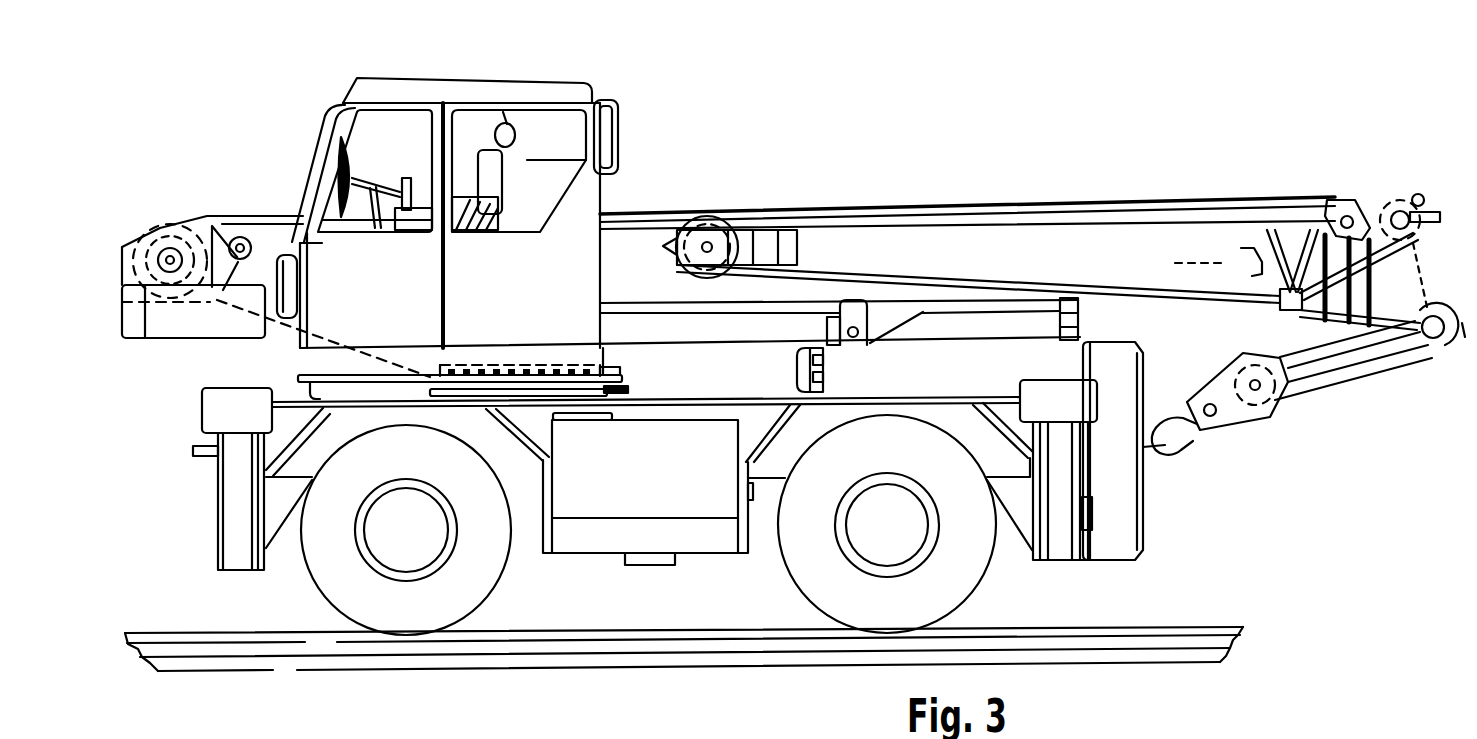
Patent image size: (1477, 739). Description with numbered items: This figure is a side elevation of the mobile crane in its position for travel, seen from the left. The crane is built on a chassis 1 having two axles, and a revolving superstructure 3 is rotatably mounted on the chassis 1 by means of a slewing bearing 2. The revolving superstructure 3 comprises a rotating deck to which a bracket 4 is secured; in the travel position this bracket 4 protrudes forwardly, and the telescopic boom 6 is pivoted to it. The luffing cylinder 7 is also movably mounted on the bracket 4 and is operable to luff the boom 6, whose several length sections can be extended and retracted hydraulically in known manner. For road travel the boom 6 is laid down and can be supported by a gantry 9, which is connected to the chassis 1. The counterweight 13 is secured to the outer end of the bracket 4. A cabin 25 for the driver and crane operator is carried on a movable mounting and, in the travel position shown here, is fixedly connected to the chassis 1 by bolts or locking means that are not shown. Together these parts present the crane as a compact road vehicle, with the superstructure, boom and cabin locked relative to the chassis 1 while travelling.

The chassis 1 is at (794, 433).
The slewing bearing 2 is at (628, 393).
The revolving superstructure 3 is at (620, 352).
The bracket 4 is at (258, 245).
The telescopic boom 6 is at (1220, 283).
The luffing cylinder 7 is at (758, 330).
The gantry 9 is at (1073, 300).
The counterweight 13 is at (177, 327).
The cabin 25 is at (415, 255).